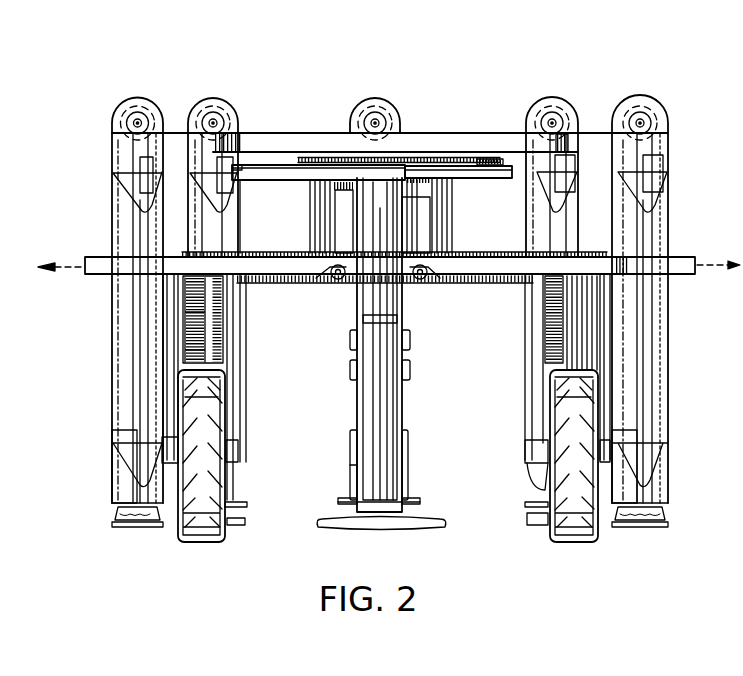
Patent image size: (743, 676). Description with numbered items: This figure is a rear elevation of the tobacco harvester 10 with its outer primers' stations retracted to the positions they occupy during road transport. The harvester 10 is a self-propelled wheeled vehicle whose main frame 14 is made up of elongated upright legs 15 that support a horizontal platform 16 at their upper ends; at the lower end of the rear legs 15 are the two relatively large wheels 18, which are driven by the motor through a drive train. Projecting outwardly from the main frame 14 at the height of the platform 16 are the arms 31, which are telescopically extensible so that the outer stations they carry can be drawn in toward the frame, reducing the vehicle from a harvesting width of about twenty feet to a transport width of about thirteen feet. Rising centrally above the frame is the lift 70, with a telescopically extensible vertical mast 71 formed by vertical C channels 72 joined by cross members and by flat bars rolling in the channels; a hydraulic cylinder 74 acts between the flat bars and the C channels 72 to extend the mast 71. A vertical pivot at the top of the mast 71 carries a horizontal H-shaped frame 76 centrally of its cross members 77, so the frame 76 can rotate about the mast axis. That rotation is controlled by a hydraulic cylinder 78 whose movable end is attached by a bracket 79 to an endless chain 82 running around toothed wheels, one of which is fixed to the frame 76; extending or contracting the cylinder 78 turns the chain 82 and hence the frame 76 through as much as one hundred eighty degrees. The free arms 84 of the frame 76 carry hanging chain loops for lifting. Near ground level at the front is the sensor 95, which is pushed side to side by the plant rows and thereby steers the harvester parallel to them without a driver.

The harvester 10 is at (362, 88).
The main frame 14 is at (497, 285).
The legs 15 is at (233, 352).
The horizontal platform 16 is at (497, 253).
The large wheels 18 is at (205, 485).
The arms 31 is at (97, 262).
The lift 70 is at (508, 88).
The vertical mast 71 is at (400, 305).
The vertical C channels 72 is at (357, 407).
The hydraulic cylinder 74 is at (377, 292).
The H-shaped frame 76 is at (430, 140).
The cross members 77 is at (297, 135).
The hydraulic cylinder 78 is at (257, 172).
The bracket 79 is at (514, 172).
The endless chain 82 is at (482, 158).
The free arms 84 is at (578, 135).
The sensor 95 is at (436, 518).